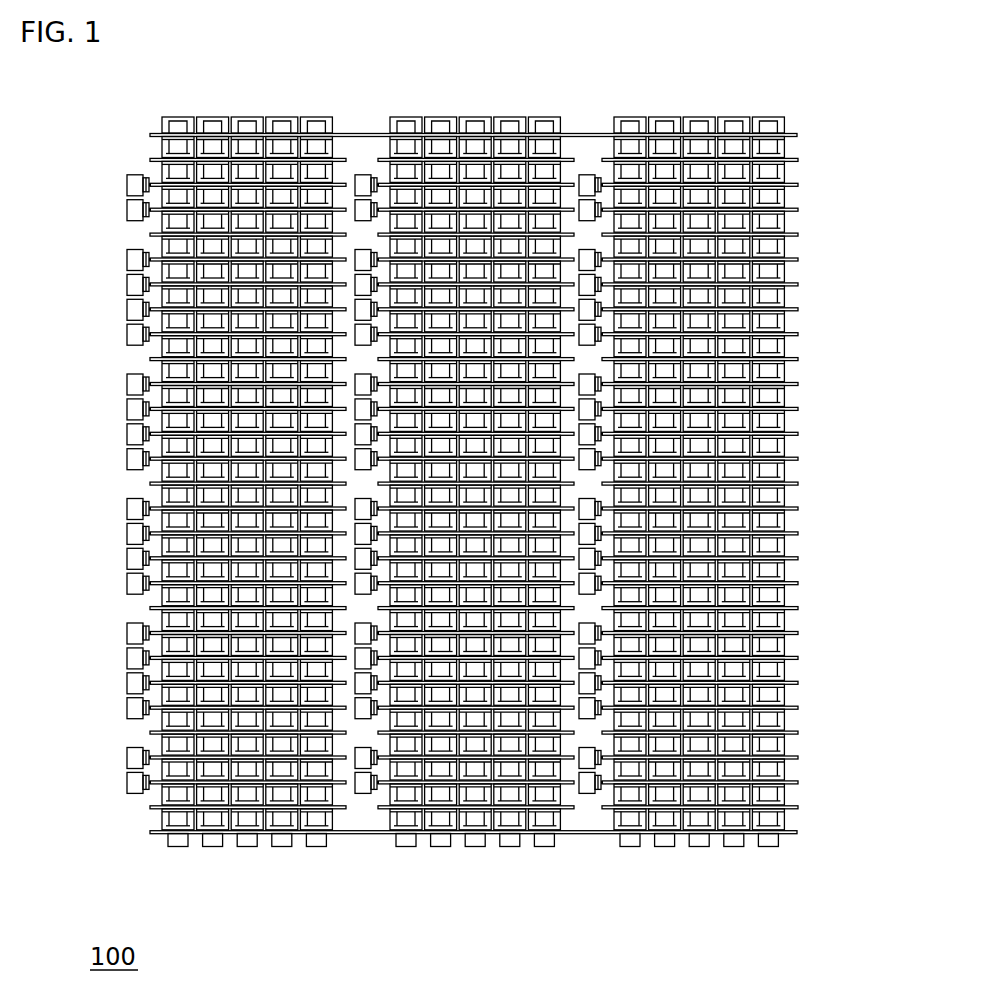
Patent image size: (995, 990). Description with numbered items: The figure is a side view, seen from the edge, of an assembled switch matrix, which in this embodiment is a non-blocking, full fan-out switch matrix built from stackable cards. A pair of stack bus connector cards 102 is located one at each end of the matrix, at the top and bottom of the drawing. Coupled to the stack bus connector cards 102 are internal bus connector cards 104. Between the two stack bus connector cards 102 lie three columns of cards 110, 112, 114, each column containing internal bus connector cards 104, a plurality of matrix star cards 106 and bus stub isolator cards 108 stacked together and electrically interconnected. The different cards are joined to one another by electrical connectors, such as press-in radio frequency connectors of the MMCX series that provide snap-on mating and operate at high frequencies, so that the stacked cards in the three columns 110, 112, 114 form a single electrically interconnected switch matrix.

The stack bus connector card 102 is at (800, 132).
The internal bus connector card 104 is at (802, 160).
The matrix star card 106 is at (802, 211).
The bus stub isolator card 108 is at (802, 235).
The first column of cards 110 is at (245, 110).
The second column of cards 112 is at (480, 110).
The third column of cards 114 is at (695, 110).